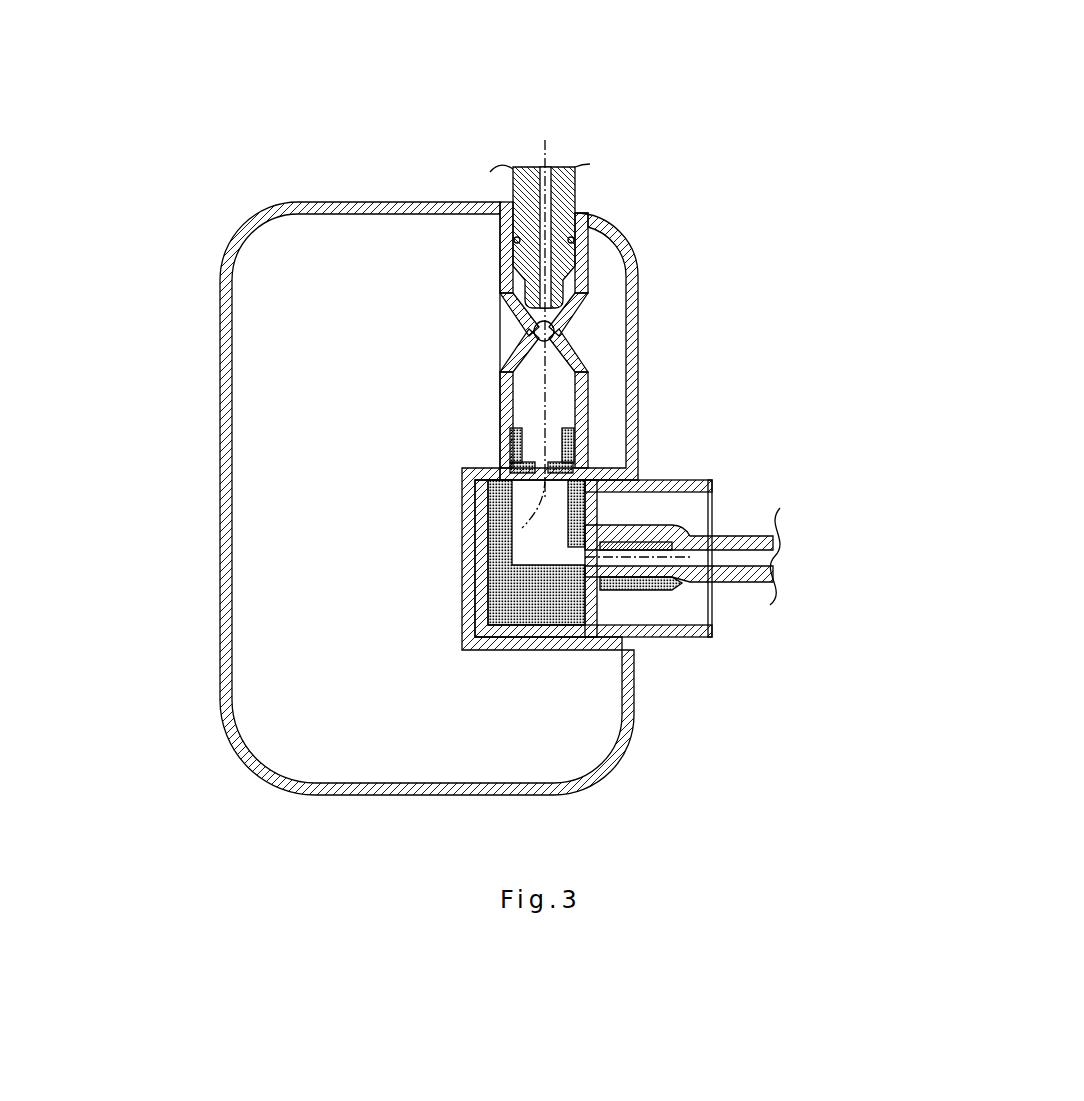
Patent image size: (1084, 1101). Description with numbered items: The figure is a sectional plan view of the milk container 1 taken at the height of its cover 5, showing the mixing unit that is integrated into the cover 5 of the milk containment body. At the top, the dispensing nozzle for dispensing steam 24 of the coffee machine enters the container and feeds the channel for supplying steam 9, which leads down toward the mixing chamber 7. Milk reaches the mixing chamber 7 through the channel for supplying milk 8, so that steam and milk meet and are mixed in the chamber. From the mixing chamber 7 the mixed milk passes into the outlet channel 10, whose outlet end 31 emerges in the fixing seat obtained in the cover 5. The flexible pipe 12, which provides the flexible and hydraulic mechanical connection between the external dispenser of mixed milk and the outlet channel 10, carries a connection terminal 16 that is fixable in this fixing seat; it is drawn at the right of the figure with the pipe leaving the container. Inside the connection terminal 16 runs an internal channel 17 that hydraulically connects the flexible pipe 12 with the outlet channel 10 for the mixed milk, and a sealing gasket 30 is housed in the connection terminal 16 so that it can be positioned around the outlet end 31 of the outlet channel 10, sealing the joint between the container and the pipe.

The milk container 1 is at (180, 660).
The cover 5 is at (215, 388).
The mixing chamber 7 is at (533, 326).
The channel for supplying milk 8 is at (554, 342).
The channel for supplying steam 9 is at (580, 282).
The outlet channel 10 is at (530, 388).
The flexible pipe 12 is at (735, 585).
The connection terminal 16 is at (688, 480).
The internal channel 17 is at (655, 585).
The dispensing nozzle for dispensing steam 24 is at (528, 167).
The sealing gasket 30 is at (525, 640).
The outlet end 31 is at (482, 556).